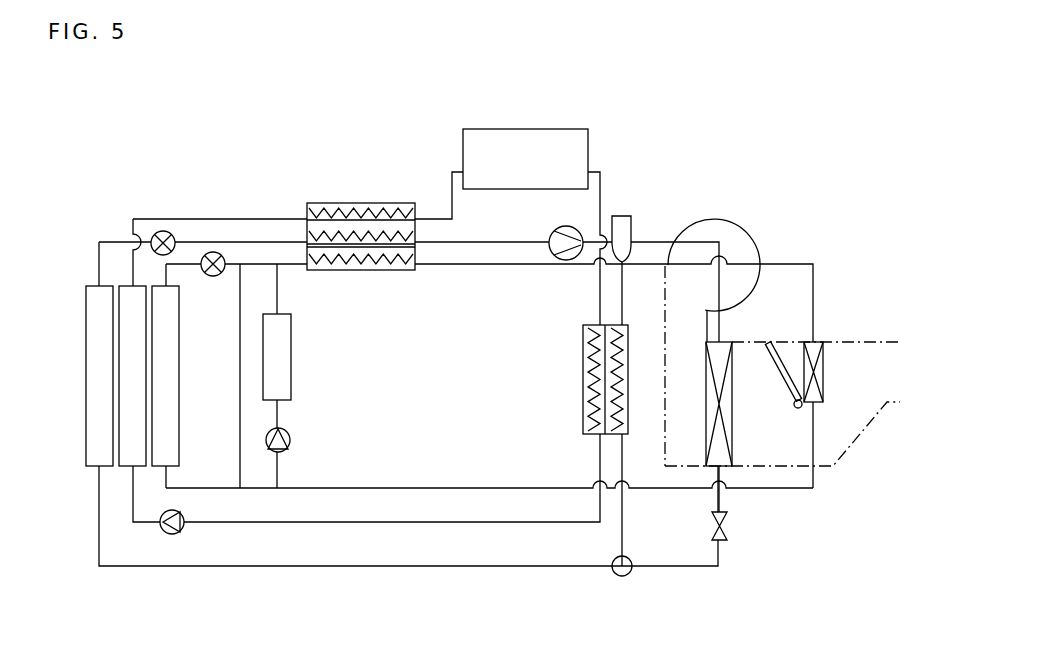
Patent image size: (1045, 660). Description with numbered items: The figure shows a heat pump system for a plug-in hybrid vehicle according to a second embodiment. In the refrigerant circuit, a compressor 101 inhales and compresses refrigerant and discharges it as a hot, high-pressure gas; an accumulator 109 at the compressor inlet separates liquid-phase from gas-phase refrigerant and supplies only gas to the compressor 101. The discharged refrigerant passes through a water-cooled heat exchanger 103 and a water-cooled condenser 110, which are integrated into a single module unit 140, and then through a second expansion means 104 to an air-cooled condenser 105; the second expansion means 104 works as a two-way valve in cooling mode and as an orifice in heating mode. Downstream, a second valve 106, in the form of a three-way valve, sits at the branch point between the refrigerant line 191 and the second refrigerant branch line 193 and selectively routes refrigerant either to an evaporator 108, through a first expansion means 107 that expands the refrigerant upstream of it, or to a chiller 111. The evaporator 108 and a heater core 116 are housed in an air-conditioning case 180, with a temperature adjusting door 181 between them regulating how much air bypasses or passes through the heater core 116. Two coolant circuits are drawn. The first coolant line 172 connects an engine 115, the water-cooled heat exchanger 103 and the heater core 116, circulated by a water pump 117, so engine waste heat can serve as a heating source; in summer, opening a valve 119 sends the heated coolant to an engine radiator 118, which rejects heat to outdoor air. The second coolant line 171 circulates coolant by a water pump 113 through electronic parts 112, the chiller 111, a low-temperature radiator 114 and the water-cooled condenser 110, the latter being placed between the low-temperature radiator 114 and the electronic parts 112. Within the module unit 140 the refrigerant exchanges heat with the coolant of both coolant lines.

The compressor 101 is at (564, 226).
The water-cooled heat exchanger 103 is at (323, 272).
The second expansion means 104 is at (164, 231).
The air-cooled condenser 105 is at (88, 468).
The second valve 106 is at (623, 578).
The first expansion means 107 is at (728, 533).
The evaporator 108 is at (733, 437).
The accumulator 109 is at (626, 216).
The water-cooled condenser 110 is at (417, 208).
The chiller 111 is at (583, 382).
The electronic parts 112 is at (541, 129).
The water pump 113 is at (180, 531).
The low-temperature radiator 114 is at (124, 468).
The engine 115 is at (292, 373).
The heater core 116 is at (824, 352).
The water pump 117 is at (291, 440).
The engine radiator 118 is at (182, 378).
The valve 119 is at (213, 277).
The module unit 140 is at (390, 135).
The second coolant line 171 is at (601, 187).
The first coolant line 172 is at (380, 487).
The air-conditioning case 180 is at (858, 440).
The temperature adjusting door 181 is at (786, 343).
The refrigerant line 191 is at (533, 242).
The second refrigerant branch line 193 is at (624, 520).